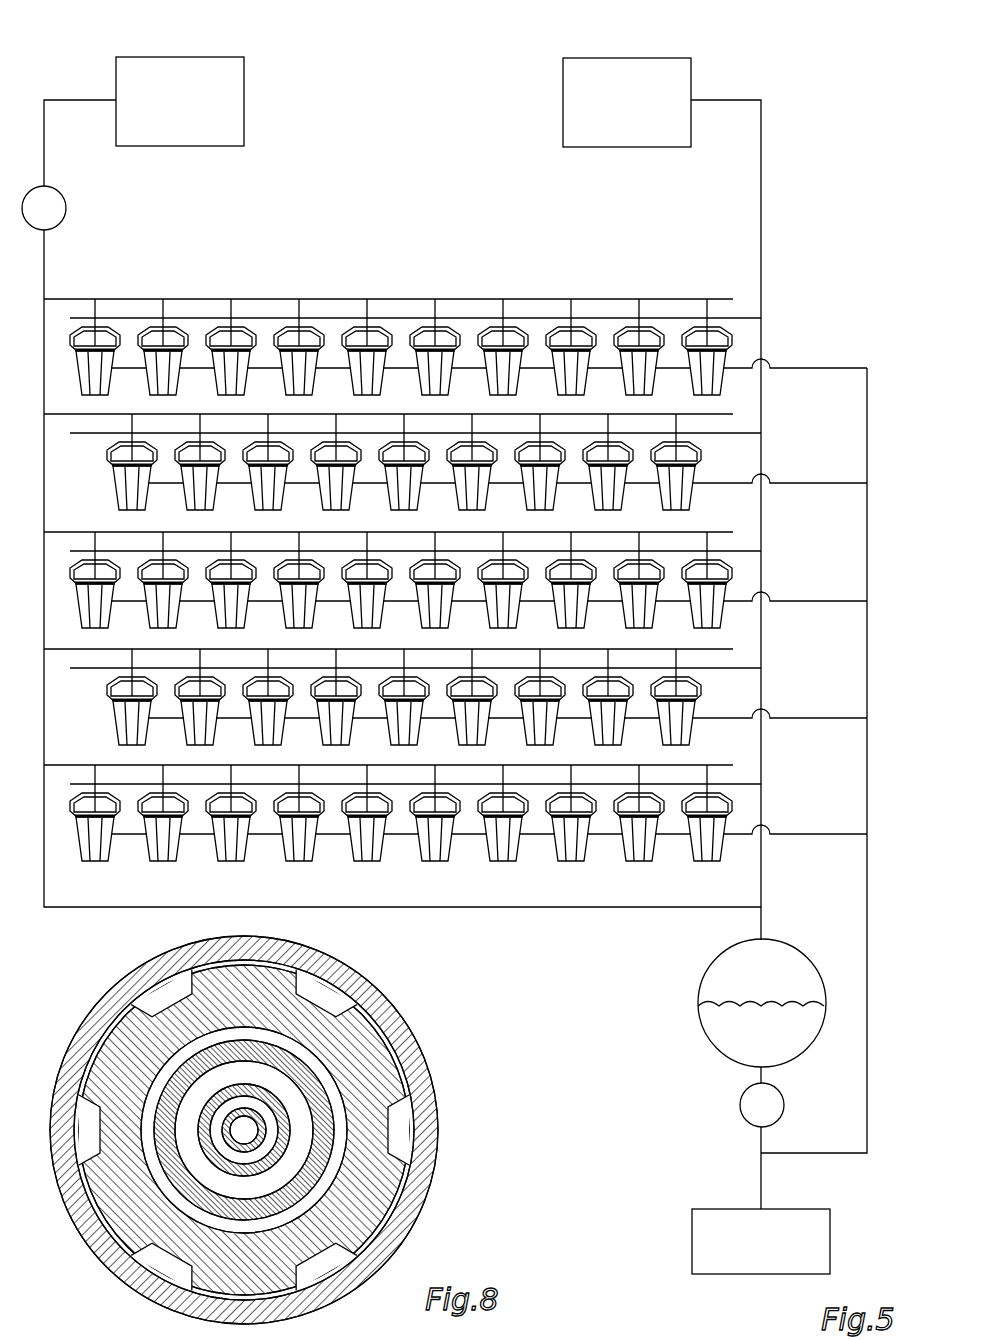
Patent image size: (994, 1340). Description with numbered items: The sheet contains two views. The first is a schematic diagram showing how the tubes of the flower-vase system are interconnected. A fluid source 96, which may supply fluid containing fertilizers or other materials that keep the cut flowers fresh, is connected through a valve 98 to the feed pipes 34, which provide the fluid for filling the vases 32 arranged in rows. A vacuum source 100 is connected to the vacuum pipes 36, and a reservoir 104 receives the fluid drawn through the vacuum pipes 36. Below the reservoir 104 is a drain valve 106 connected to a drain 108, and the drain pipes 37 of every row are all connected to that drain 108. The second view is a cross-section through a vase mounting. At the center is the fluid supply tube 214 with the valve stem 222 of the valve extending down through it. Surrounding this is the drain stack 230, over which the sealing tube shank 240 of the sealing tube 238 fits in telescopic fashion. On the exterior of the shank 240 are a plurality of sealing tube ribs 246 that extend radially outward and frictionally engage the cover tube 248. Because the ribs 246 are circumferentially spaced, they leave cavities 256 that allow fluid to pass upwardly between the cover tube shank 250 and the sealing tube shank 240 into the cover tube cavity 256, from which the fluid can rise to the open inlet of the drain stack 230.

In FIG. 5, the cup / container 32 is at (228, 395).
In FIG. 5, the feed pipes 34 is at (90, 299).
In FIG. 5, the vacuum pipes 36 is at (107, 318).
In FIG. 5, the drain pipes 37 is at (575, 368).
In FIG. 5, the fluid source 96 is at (215, 57).
In FIG. 5, the valve 98 is at (60, 200).
In FIG. 5, the vacuum source 100 is at (588, 58).
In FIG. 5, the reservoir 104 is at (712, 967).
In FIG. 5, the drain valve 106 is at (743, 1097).
In FIG. 5, the drain 108 is at (692, 1222).
In FIG. 8, the fluid supply tube 214 is at (262, 1143).
In FIG. 8, the valve stem 222 is at (258, 1120).
In FIG. 8, the drain stack 230 is at (185, 1235).
In FIG. 8, the sealing tube 238 is at (148, 1225).
In FIG. 8, the sealing tube shank 240 is at (135, 1080).
In FIG. 8, the sealing tube ribs 246 is at (152, 985).
In FIG. 8, the cover tube 248 is at (420, 994).
In FIG. 8, the cover tube shank 250 is at (290, 960).
In FIG. 8, the cover tube cavity 256 is at (120, 1060).